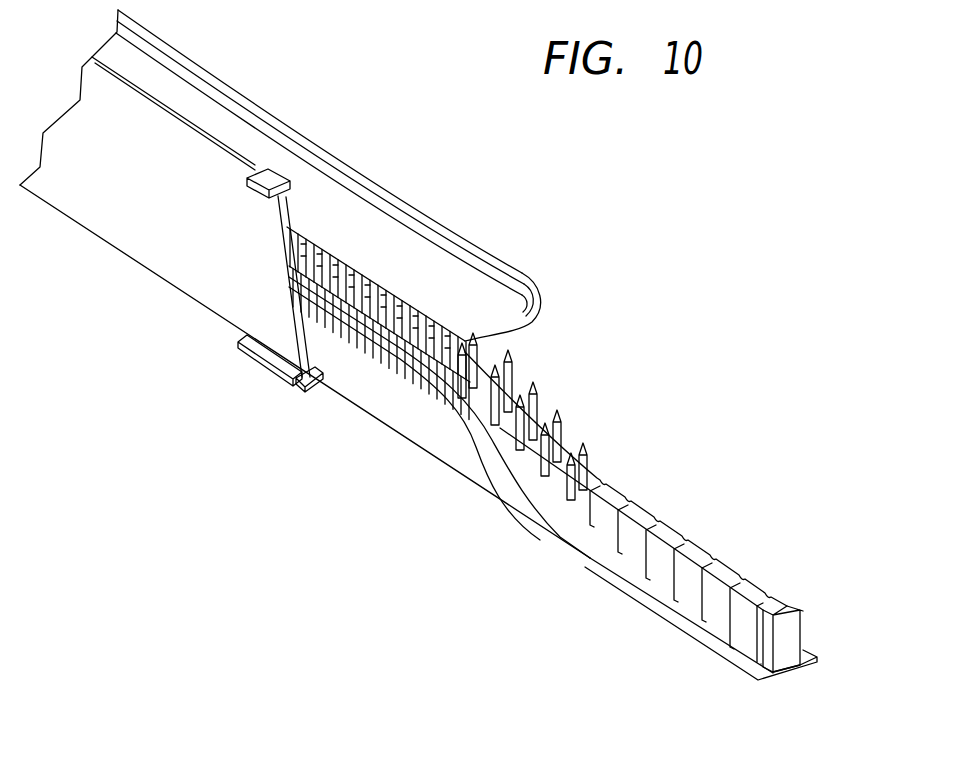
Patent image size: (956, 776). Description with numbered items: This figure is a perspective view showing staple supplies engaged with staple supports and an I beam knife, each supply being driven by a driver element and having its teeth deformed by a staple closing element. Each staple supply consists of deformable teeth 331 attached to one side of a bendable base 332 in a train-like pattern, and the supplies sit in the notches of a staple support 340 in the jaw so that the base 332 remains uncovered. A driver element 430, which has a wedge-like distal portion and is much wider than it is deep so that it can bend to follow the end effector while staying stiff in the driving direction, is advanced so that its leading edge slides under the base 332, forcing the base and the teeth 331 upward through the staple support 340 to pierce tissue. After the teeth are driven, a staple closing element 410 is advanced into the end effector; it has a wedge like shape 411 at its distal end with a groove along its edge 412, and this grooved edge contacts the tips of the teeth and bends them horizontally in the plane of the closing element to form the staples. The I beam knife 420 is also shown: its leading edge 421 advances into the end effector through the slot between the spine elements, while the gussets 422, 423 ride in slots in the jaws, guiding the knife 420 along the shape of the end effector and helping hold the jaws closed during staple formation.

The staple closing element 410 is at (359, 215).
The wedge like shape 411 is at (493, 318).
The groove along its edge 412 is at (417, 312).
The I beam knife 420 is at (88, 217).
The leading edge 421 is at (283, 282).
The gusset 422 is at (248, 189).
The gusset 423 is at (312, 390).
The driver element 430 is at (427, 440).
The teeth 331 is at (727, 647).
The bendable base 332 is at (517, 430).
The staple support 340 is at (748, 587).